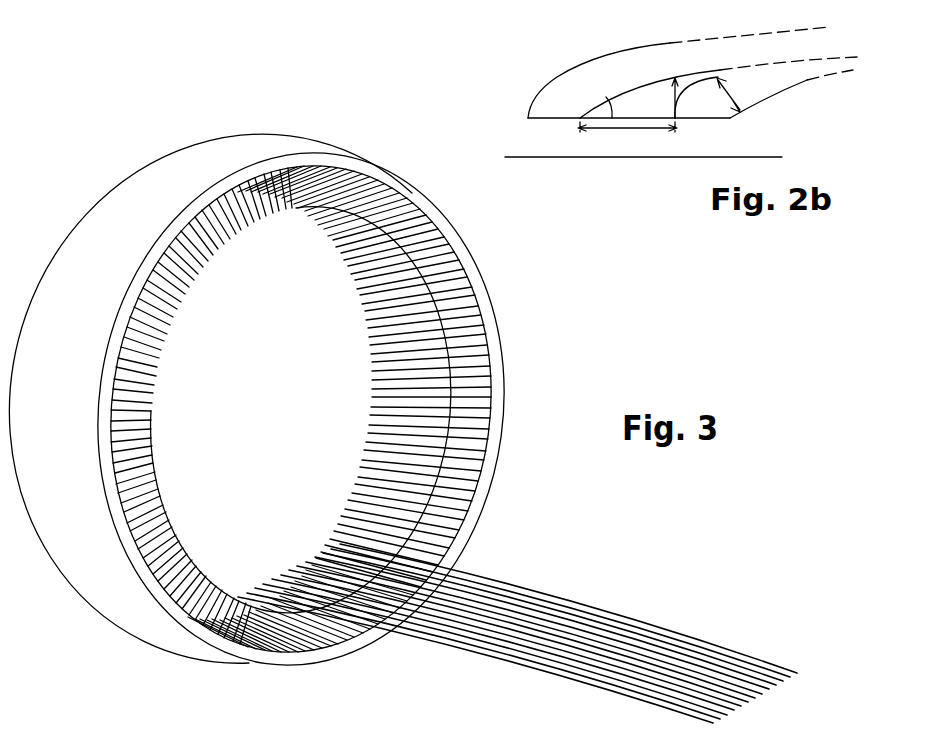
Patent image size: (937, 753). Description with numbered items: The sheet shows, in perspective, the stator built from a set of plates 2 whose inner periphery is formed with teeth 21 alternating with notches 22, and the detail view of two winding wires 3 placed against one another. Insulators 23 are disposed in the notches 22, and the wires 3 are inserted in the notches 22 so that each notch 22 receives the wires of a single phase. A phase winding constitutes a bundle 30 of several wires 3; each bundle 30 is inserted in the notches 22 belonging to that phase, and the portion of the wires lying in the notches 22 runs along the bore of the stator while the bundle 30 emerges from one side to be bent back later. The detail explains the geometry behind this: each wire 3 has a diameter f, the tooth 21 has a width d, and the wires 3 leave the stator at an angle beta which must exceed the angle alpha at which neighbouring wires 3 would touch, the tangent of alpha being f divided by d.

In FIG. 2B, the set of plates 2 is at (530, 136).
In FIG. 3, the set of plates 2 is at (462, 243).
In FIG. 3, the tooth 21 is at (497, 383).
In FIG. 3, the notch 22 is at (483, 307).
In FIG. 3, the insulator 23 is at (468, 270).
In FIG. 2B, the wire 3 is at (588, 84).
In FIG. 3, the wire 3 is at (623, 628).
In FIG. 3, the bundle 30 is at (580, 687).